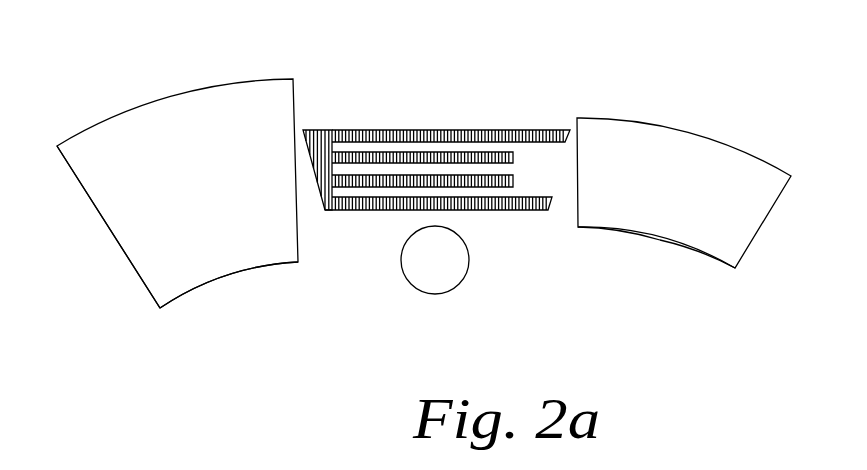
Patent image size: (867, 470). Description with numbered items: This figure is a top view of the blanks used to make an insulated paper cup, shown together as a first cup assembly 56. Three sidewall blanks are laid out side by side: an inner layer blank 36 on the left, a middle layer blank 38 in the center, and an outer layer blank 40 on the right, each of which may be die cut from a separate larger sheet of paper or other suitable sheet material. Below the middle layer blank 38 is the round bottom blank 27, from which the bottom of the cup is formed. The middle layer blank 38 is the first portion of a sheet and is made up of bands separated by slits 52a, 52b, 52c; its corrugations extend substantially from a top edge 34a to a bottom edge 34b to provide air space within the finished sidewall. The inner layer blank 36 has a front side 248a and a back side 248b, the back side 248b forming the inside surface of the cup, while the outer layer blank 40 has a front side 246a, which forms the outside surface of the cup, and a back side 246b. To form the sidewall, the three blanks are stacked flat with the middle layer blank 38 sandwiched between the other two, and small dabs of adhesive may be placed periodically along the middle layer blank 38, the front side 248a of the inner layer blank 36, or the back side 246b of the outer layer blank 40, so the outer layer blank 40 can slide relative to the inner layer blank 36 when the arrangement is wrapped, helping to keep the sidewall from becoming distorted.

The bottom blank 27 is at (430, 283).
The top edge 34a is at (323, 128).
The bottom edge 34b is at (333, 212).
The inner layer blank 36 is at (141, 89).
The middle layer blank 38 is at (432, 158).
The outer layer blank 40 is at (646, 103).
The slit 52a is at (399, 134).
The slit 52b is at (481, 158).
The slit 52c is at (493, 205).
The first cup assembly 56 is at (760, 103).
The front side of outer layer blank 246a is at (612, 220).
The back side of outer layer blank 246b is at (710, 232).
The front side of inner layer blank 248a is at (112, 218).
The back side of inner layer blank 248b is at (238, 232).